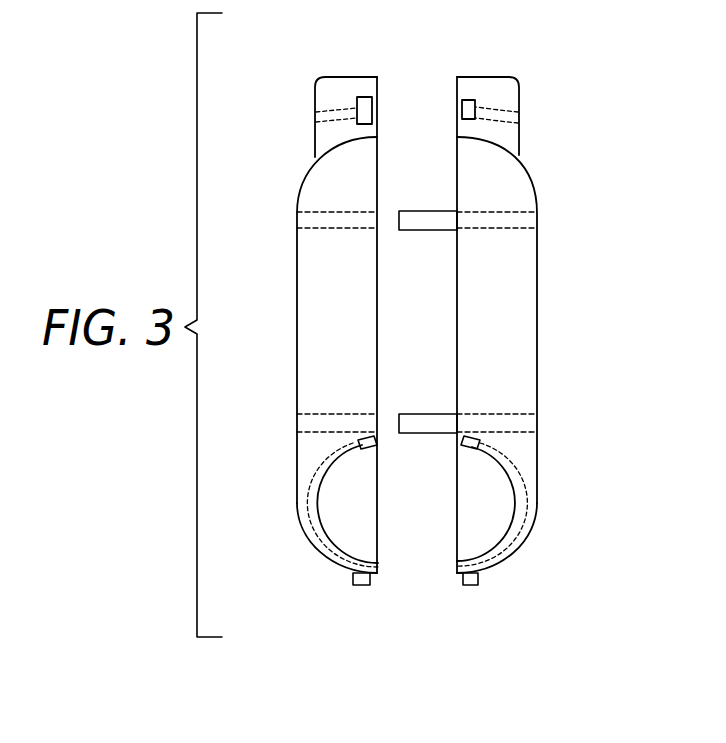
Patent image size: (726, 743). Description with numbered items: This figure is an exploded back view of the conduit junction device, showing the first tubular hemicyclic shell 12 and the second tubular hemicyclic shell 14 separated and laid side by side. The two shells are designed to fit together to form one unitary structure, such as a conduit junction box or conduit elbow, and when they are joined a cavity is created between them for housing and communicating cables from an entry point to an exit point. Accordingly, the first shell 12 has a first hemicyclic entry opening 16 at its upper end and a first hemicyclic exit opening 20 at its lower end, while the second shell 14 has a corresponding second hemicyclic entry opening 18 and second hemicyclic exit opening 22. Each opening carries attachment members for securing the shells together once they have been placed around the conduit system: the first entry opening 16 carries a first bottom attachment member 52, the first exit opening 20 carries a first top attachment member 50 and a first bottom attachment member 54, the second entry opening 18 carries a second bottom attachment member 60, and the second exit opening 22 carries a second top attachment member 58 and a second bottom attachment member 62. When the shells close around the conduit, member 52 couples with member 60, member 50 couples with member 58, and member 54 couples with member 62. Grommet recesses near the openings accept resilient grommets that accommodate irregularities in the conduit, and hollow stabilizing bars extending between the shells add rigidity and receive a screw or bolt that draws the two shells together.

The first tubular hemicyclic shell 12 is at (525, 312).
The second tubular hemicyclic shell 14 is at (313, 338).
The first hemicyclic entry opening 16 is at (502, 88).
The second hemicyclic entry opening 18 is at (333, 90).
The first hemicyclic exit opening 20 is at (520, 507).
The second hemicyclic exit opening 22 is at (353, 533).
The first top attachment member 50 is at (485, 440).
The first bottom attachment member 52 is at (468, 100).
The first bottom attachment member 54 is at (477, 582).
The second top attachment member 58 is at (357, 440).
The second bottom attachment member 60 is at (365, 108).
The second bottom attachment member 62 is at (362, 588).